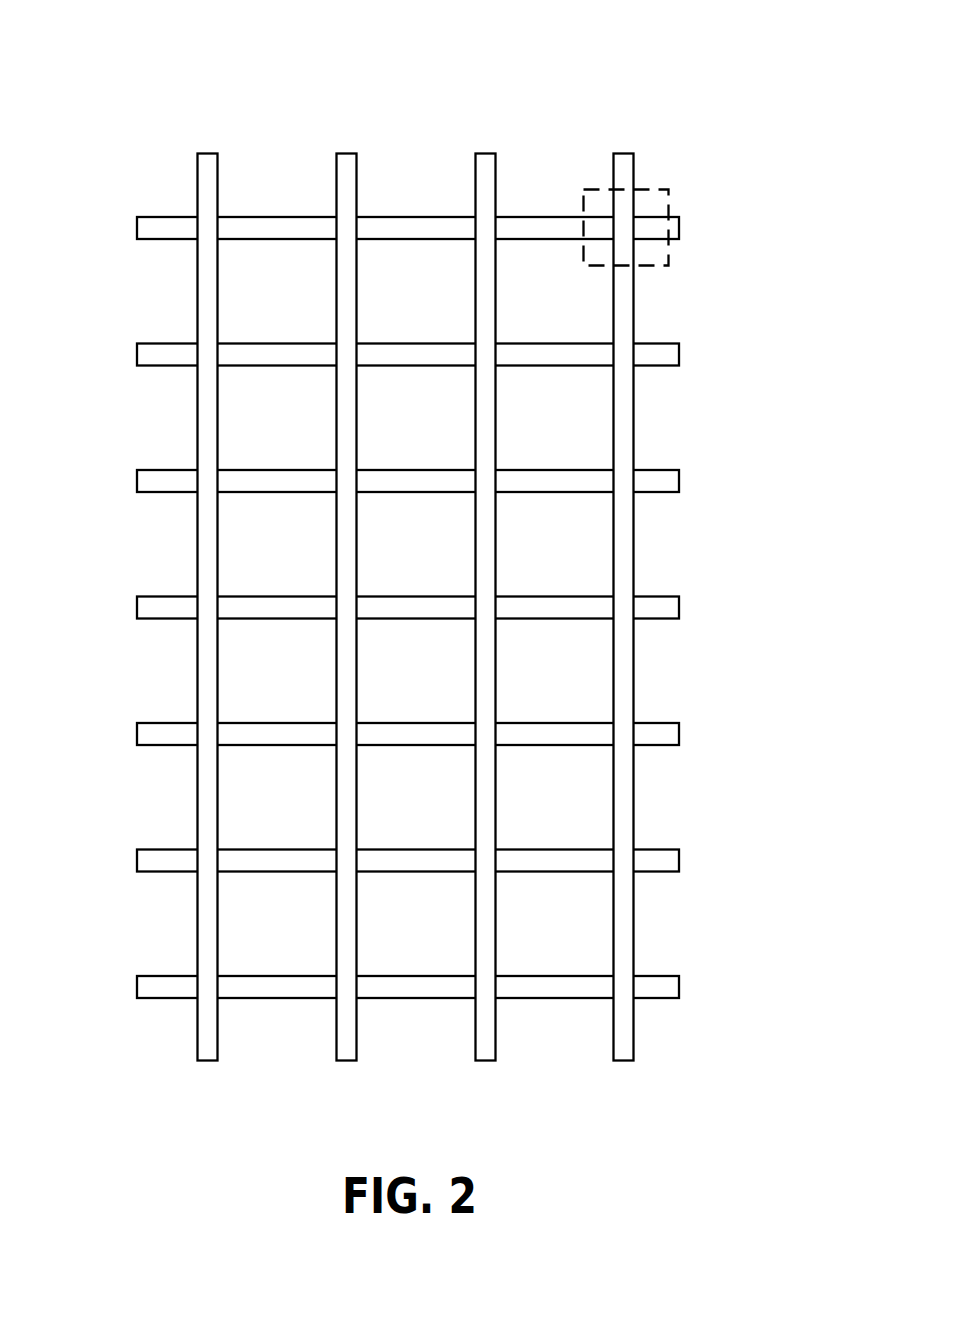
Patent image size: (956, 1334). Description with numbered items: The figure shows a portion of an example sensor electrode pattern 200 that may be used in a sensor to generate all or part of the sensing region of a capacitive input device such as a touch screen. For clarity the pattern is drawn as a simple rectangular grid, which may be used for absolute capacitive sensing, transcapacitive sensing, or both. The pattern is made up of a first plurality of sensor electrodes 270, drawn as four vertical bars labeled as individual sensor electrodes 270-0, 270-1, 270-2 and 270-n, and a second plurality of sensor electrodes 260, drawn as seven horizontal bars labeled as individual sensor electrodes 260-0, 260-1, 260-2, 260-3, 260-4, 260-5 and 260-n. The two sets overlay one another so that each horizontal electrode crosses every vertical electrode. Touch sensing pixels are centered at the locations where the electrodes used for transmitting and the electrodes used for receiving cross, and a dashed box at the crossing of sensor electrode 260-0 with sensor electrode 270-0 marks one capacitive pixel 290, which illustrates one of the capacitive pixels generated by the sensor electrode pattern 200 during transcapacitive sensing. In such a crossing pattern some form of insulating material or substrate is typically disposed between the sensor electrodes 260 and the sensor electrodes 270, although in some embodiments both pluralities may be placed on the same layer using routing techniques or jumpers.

The sensor electrode pattern 200 is at (120, 34).
The second plurality of sensor electrodes 260 is at (121, 180).
The sensor electrode 260-0 is at (674, 234).
The sensor electrode 260-1 is at (674, 360).
The sensor electrode 260-2 is at (674, 487).
The sensor electrode 260-3 is at (674, 614).
The sensor electrode 260-4 is at (674, 740).
The sensor electrode 260-5 is at (674, 866).
The sensor electrode 260-n is at (674, 993).
The first plurality of sensor electrodes 270 is at (640, 127).
The sensor electrode 270-0 is at (622, 1035).
The sensor electrode 270-1 is at (484, 1035).
The sensor electrode 270-2 is at (345, 1035).
The sensor electrode 270-n is at (206, 1035).
The capacitive pixel 290 is at (657, 190).